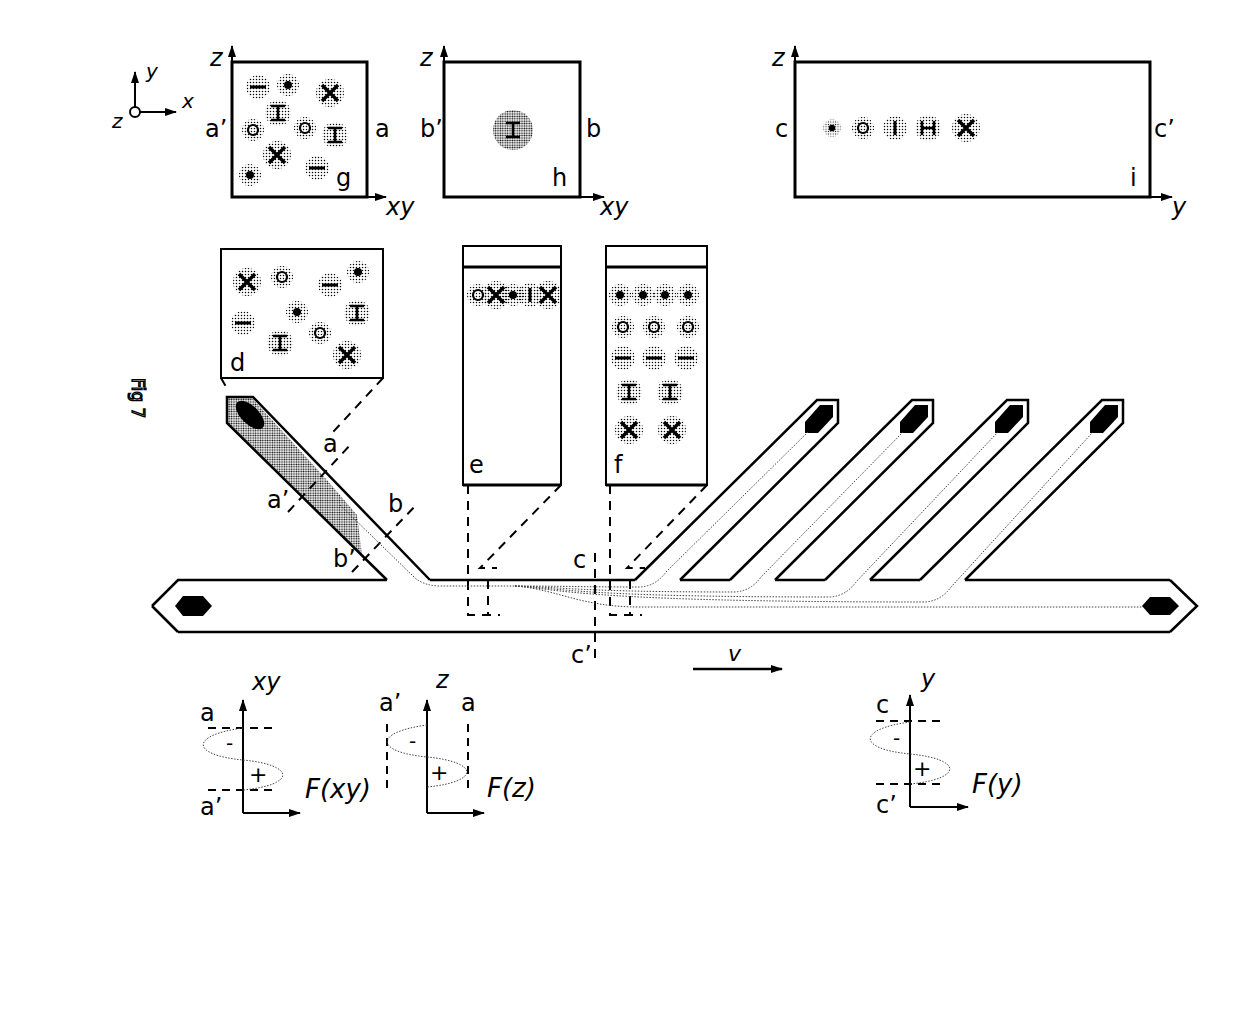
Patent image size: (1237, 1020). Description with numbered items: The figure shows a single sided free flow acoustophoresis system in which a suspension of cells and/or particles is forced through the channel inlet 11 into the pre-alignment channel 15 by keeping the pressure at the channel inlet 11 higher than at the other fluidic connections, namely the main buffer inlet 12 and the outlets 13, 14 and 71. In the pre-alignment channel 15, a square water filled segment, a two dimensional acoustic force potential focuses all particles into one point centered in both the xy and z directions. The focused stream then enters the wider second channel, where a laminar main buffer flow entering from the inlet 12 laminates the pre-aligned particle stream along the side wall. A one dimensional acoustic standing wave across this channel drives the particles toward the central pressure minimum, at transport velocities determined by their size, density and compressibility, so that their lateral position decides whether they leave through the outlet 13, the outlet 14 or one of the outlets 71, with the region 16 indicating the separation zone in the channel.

The channel inlet 11 is at (224, 428).
The main buffer flow inlet 12 is at (165, 637).
The outlet 13 is at (1165, 623).
The outlet 14 is at (828, 388).
The pre-alignment channel 15 is at (323, 504).
The particle separation region 16 is at (535, 613).
The outlet 71 is at (921, 388).